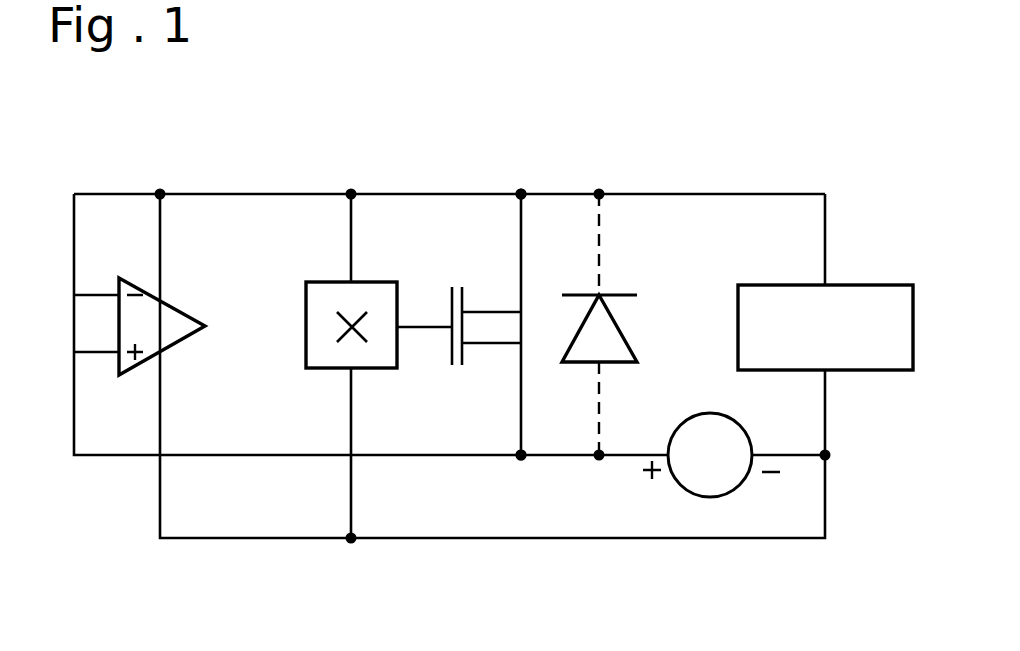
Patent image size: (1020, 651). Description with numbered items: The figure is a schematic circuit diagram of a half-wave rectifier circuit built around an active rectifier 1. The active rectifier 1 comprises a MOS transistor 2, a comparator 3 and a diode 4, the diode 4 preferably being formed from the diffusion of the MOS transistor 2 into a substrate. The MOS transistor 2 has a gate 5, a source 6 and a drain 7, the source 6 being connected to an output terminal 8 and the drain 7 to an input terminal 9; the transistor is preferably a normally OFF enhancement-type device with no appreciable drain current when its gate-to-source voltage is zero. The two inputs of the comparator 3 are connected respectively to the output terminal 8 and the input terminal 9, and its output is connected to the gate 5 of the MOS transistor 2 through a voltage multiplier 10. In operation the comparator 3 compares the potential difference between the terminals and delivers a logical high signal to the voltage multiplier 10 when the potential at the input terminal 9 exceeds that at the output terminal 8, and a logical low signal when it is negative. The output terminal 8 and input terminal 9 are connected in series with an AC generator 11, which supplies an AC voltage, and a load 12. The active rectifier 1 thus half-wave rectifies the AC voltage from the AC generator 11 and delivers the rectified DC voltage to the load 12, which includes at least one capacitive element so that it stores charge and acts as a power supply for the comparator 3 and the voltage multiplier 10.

The active rectifier 1 is at (243, 162).
The MOS transistor 2 is at (462, 280).
The comparator 3 is at (171, 320).
The diode 4 is at (610, 345).
The gate 5 is at (428, 330).
The source 6 is at (487, 310).
The drain 7 is at (490, 348).
The output terminal 8 is at (522, 185).
The input terminal 9 is at (523, 463).
The voltage multiplier 10 is at (320, 286).
The AC generator 11 is at (703, 486).
The load 12 is at (880, 297).